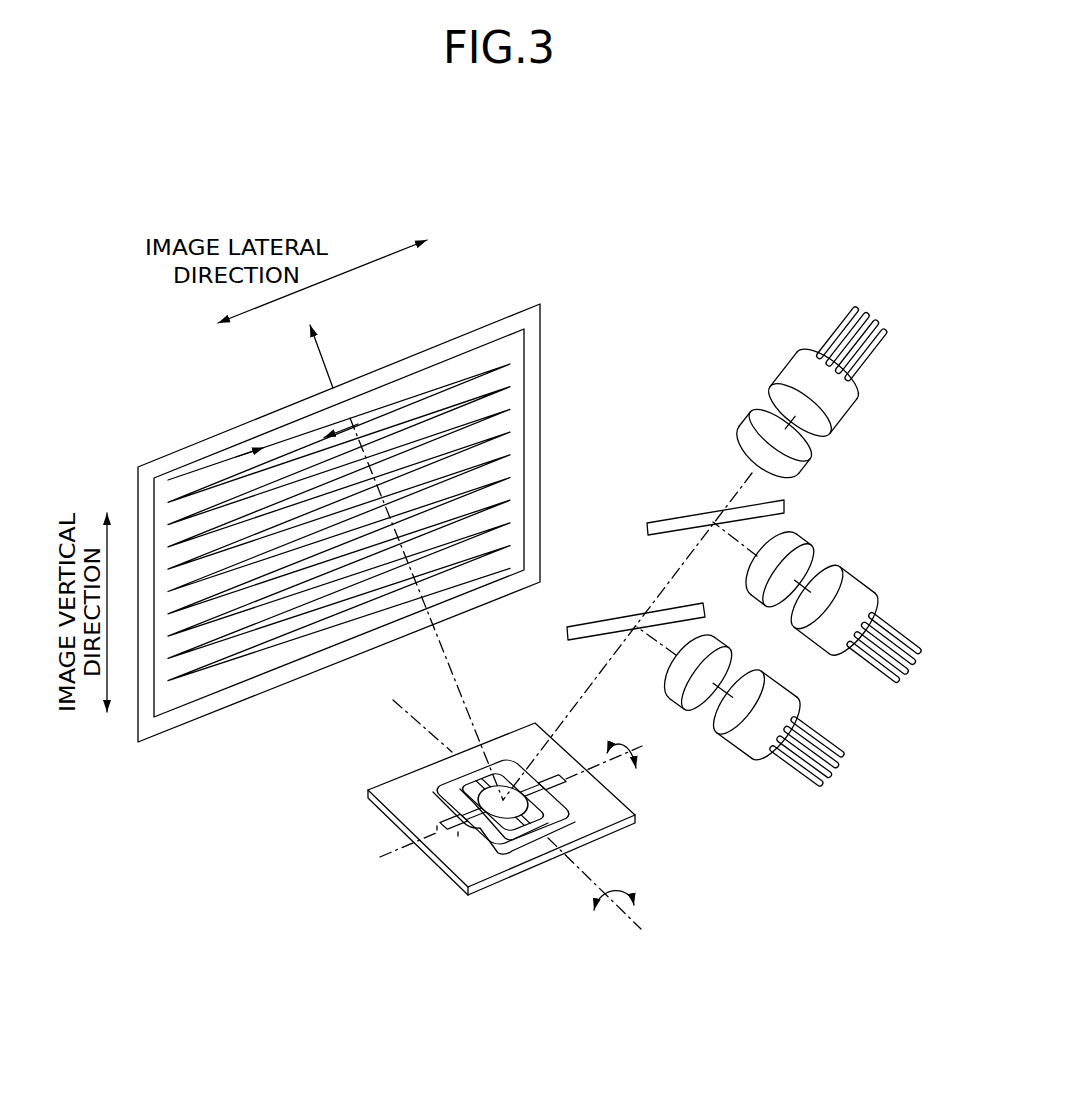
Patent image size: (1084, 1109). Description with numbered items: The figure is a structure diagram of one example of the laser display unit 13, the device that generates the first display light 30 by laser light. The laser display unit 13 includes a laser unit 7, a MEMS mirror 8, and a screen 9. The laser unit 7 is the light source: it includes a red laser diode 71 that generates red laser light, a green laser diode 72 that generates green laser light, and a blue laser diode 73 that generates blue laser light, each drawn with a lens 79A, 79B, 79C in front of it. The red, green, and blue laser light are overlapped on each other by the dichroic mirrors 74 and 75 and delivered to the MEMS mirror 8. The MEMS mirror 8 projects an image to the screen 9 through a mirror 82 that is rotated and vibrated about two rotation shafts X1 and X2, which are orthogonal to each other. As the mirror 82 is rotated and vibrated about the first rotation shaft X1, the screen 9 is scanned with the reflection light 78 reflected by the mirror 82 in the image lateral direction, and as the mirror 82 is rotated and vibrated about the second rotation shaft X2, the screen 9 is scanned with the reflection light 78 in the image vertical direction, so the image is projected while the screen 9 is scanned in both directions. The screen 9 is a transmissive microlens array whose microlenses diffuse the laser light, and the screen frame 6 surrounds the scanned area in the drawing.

The laser display unit 13 is at (583, 186).
The laser unit 7 is at (768, 278).
The red laser diode 71 is at (788, 368).
The green laser diode 72 is at (863, 572).
The blue laser diode 73 is at (783, 683).
The collimating lens 79A is at (811, 463).
The collimating lens 79B is at (818, 541).
The collimating lens 79C is at (683, 718).
The dichroic mirror 74 is at (676, 516).
The dichroic mirror 75 is at (600, 616).
The MEMS mirror 8 is at (388, 778).
The mirror 82 is at (495, 806).
The reflection light 78 is at (452, 670).
The screen 6 is at (230, 426).
The screen 9 is at (362, 408).
The first display light 30 is at (322, 362).
The first rotation shaft X1 is at (659, 944).
The second rotation shaft X2 is at (359, 867).